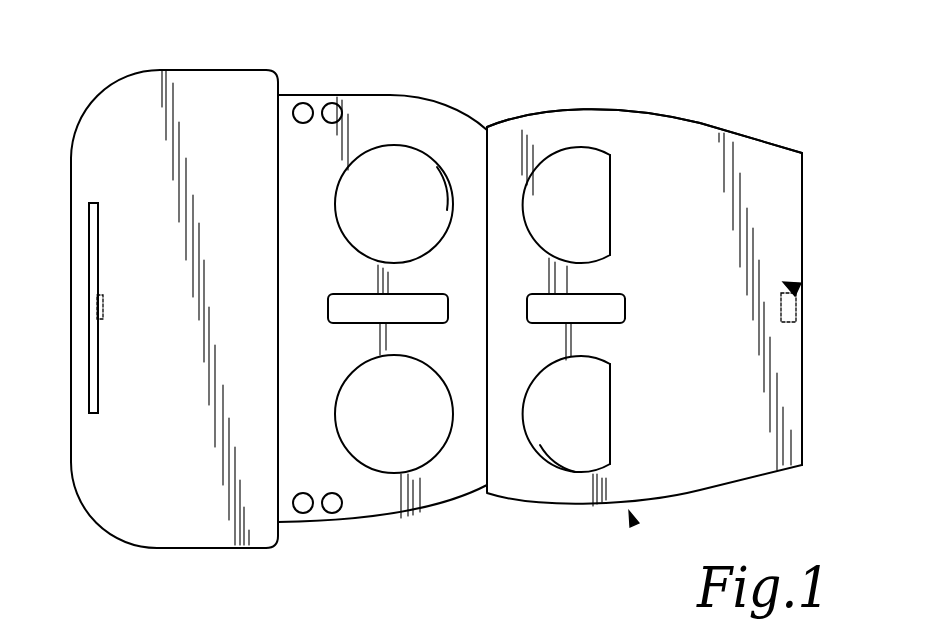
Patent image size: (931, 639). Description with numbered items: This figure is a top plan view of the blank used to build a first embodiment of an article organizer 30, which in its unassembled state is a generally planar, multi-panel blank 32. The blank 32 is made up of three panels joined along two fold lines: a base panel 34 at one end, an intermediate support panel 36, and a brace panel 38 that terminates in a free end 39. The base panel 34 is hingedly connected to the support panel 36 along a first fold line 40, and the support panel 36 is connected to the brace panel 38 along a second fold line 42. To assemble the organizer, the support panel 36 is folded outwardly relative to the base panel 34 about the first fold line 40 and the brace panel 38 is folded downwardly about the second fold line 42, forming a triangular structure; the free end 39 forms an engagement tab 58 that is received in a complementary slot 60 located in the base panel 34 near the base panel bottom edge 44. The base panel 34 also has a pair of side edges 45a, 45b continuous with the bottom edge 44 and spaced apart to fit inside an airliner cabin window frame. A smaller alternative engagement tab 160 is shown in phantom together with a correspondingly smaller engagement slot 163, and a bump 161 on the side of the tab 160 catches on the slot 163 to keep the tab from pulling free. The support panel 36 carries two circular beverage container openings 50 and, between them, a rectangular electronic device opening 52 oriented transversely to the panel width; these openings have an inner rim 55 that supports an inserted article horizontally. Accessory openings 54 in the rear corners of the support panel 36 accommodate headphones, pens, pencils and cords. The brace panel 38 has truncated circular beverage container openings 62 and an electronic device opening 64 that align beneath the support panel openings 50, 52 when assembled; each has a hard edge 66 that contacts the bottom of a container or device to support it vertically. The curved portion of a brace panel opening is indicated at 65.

The article organizer 30 is at (635, 524).
The multi-panel blank 32 is at (324, 184).
The base panel 34 is at (177, 376).
The intermediate support panel 36 is at (324, 438).
The brace panel 38 is at (727, 368).
The free end 39 is at (790, 200).
The first fold line 40 is at (278, 198).
The second fold line 42 is at (488, 272).
The base panel bottom edge 44 is at (71, 452).
The side edge 45a is at (208, 73).
The side edge 45b is at (185, 549).
The beverage container openings 50 is at (395, 185).
The electronic device opening 52 is at (328, 308).
The accessory openings 54 is at (303, 103).
The inner rim 55 is at (435, 180).
The engagement tab 58 is at (803, 363).
The slot 60 is at (93, 277).
The beverage container openings 62 is at (590, 193).
The electronic device opening 64 is at (607, 308).
The curved surface of D-shaped protrusion 65 is at (540, 445).
The hard edge 66 is at (612, 220).
The engagement tab 160 is at (794, 285).
The bump 161 is at (798, 310).
The engagement slot 163 is at (104, 312).